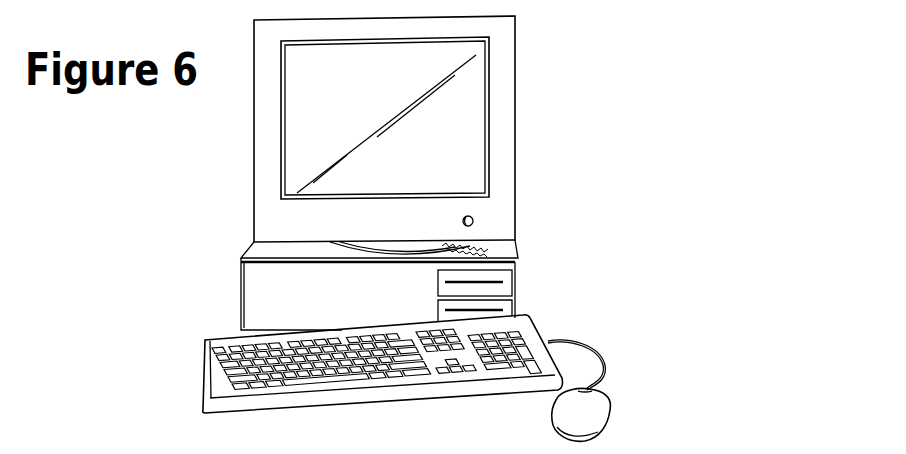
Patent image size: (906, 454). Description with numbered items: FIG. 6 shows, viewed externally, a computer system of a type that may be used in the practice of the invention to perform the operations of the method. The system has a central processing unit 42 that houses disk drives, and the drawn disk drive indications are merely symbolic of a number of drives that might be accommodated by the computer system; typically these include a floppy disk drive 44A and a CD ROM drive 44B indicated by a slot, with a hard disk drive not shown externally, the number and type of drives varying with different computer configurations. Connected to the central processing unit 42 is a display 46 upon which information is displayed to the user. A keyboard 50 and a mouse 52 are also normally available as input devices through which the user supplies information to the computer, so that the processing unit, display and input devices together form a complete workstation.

The central processing unit 42 is at (222, 244).
The display 46 is at (515, 73).
The floppy disk drive 44A is at (505, 288).
The CD ROM drive 44B is at (503, 307).
The keyboard 50 is at (204, 372).
The mouse 52 is at (592, 414).